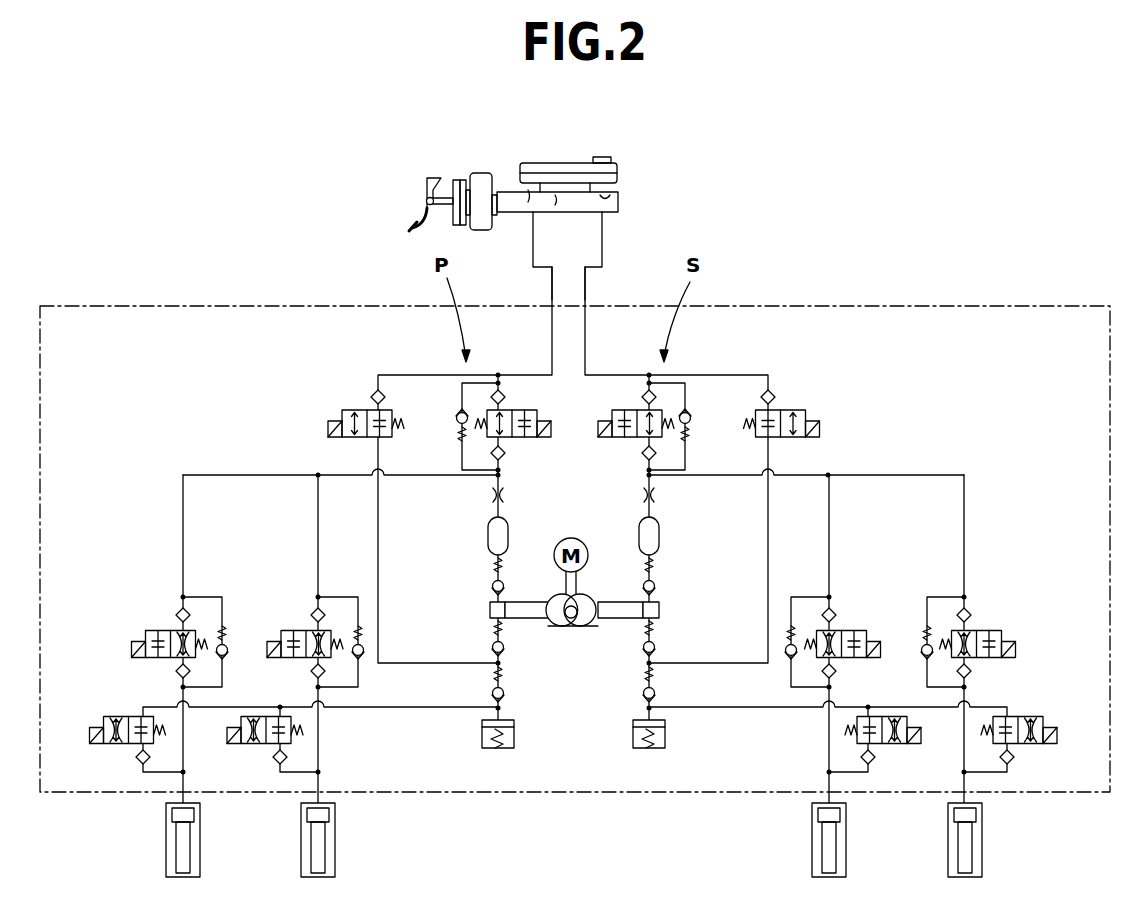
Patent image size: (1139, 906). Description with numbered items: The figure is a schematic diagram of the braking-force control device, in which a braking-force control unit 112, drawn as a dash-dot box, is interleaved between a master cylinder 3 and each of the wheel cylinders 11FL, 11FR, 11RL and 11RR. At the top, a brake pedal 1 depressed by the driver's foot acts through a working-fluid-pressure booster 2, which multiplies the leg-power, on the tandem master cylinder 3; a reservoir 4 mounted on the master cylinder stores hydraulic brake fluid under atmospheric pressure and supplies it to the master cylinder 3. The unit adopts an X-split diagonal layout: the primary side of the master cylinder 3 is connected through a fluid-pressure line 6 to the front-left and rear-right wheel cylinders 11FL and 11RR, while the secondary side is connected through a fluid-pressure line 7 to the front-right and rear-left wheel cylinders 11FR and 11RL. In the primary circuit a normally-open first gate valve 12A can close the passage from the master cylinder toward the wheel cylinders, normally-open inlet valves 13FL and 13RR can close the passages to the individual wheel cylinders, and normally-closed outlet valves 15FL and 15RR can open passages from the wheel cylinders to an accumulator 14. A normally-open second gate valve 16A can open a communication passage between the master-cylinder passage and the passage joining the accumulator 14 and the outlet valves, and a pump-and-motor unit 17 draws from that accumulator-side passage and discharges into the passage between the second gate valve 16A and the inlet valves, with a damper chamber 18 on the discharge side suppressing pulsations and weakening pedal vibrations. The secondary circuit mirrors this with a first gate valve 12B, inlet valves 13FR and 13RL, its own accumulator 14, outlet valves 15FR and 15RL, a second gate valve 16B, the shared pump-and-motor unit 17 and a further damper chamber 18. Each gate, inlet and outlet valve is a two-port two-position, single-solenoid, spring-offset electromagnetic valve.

The brake pedal 1 is at (418, 226).
The working-fluid-pressure booster 2 is at (482, 173).
The master cylinder 3 is at (618, 200).
The reservoir 4 is at (568, 163).
The fluid-pressure line 6 is at (533, 252).
The fluid-pressure line 7 is at (602, 250).
The braking-force control unit 112 is at (938, 306).
The second gate valve 16A is at (345, 410).
The second gate valve 16B is at (800, 410).
The first gate valve 12A is at (535, 437).
The first gate valve 12B is at (616, 437).
The damper chamber 18 is at (488, 532).
The pump-and-motor unit 17 is at (573, 622).
The accumulator 14 is at (483, 738).
The inlet valve 13FL is at (150, 630).
The inlet valve 13RR is at (285, 630).
The inlet valve 13RL is at (877, 607).
The inlet valve 13FR is at (1020, 607).
The outlet valve 15FL is at (102, 716).
The outlet valve 15RR is at (247, 744).
The outlet valve 15RL is at (887, 743).
The outlet valve 15FR is at (1045, 705).
The wheel cylinder 11FL is at (166, 845).
The wheel cylinder 11RR is at (301, 845).
The wheel cylinder 11RL is at (846, 845).
The wheel cylinder 11FR is at (982, 845).